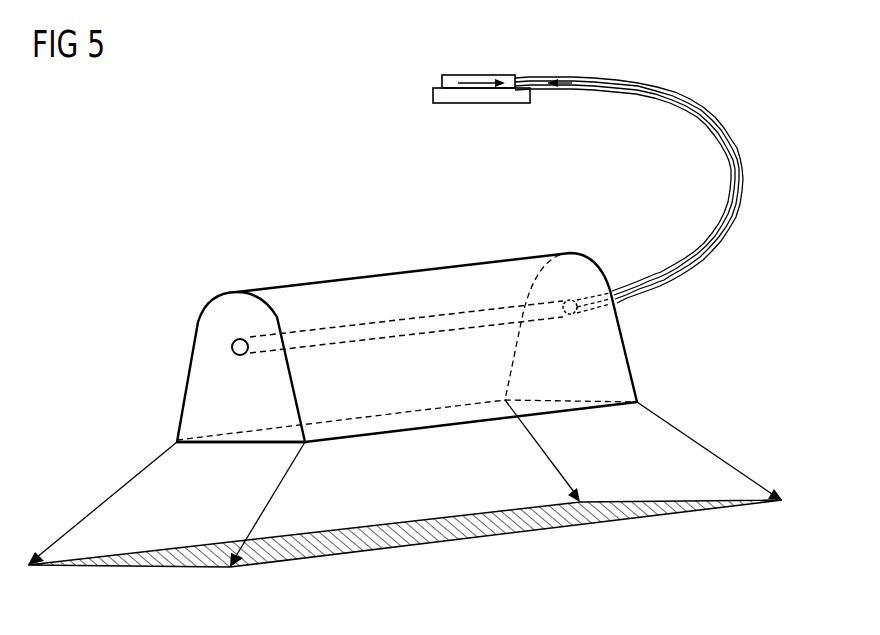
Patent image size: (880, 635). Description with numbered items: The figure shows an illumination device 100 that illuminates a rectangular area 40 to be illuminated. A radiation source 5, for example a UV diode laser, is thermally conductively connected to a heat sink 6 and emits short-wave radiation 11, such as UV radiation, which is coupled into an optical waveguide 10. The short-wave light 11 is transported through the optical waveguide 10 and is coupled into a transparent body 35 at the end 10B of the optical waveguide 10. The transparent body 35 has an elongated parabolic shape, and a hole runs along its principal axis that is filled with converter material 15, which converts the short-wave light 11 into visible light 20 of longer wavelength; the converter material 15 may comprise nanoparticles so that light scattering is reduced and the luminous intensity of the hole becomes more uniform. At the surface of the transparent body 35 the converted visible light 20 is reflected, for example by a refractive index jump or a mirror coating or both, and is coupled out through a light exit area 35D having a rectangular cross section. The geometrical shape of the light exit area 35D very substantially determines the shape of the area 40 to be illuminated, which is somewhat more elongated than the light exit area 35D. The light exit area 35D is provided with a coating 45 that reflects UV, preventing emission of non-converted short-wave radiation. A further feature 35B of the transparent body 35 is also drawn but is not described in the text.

The illumination device 100 is at (286, 164).
The radiation source 5 is at (451, 79).
The heat sink 6 is at (474, 98).
The optical waveguide 10 is at (745, 175).
The second end of the optical waveguide 10B is at (583, 315).
The short-wave radiation 11 is at (542, 79).
The converter material 15 is at (438, 324).
The visible light 20 is at (272, 497).
The transparent body 35 is at (385, 283).
The housing opening 35B is at (264, 352).
The light exit area 35D is at (245, 445).
The area to be illuminated 40 is at (393, 530).
The coating that reflects UV 45 is at (397, 418).